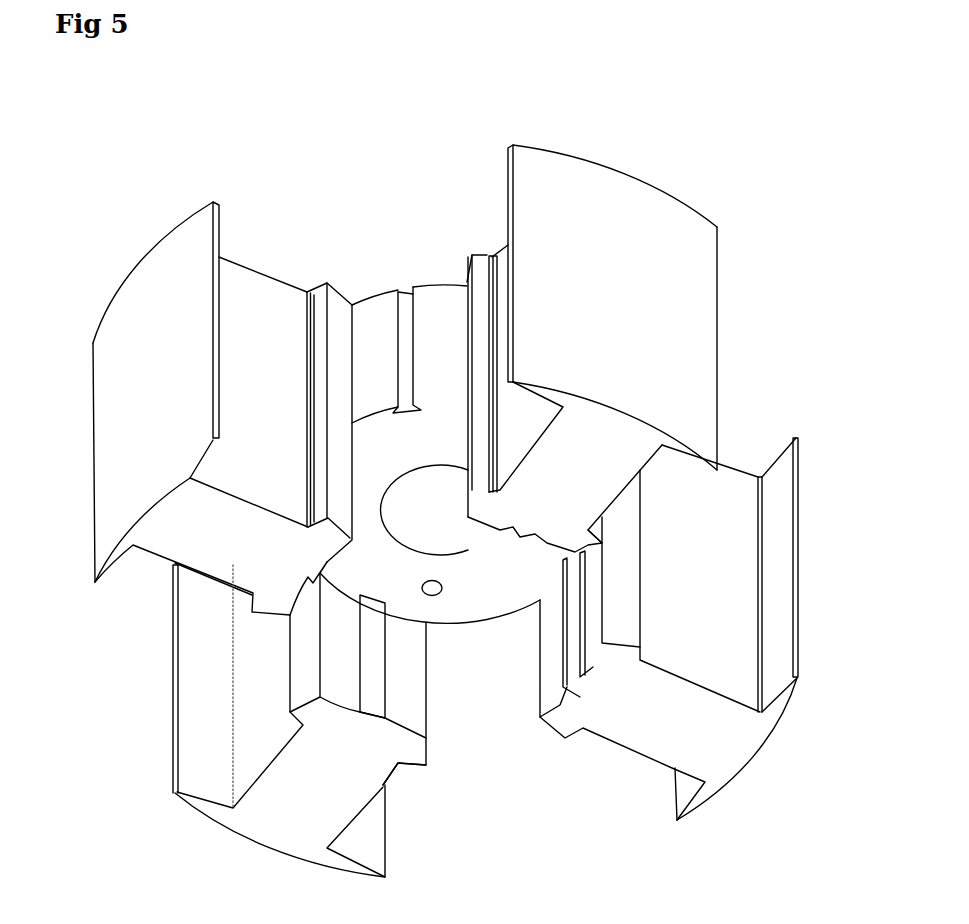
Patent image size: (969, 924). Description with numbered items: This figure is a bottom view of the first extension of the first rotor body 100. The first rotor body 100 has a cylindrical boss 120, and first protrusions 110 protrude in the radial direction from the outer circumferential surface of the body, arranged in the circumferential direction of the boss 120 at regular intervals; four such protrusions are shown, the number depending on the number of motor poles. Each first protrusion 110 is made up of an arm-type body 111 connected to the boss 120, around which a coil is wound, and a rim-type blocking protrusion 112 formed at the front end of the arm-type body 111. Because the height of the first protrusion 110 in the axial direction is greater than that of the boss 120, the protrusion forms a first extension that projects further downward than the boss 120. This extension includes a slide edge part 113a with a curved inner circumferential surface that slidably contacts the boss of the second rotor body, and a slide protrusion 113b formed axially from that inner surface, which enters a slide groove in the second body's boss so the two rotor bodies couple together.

The first rotor body 100 is at (485, 490).
The first protrusion 110 is at (709, 631).
The arm-type body 111 is at (705, 620).
The rim-type blocking protrusion 112 is at (760, 760).
The slide edge part 113a is at (555, 665).
The slide protrusion 113b is at (560, 672).
The boss 120 is at (457, 590).